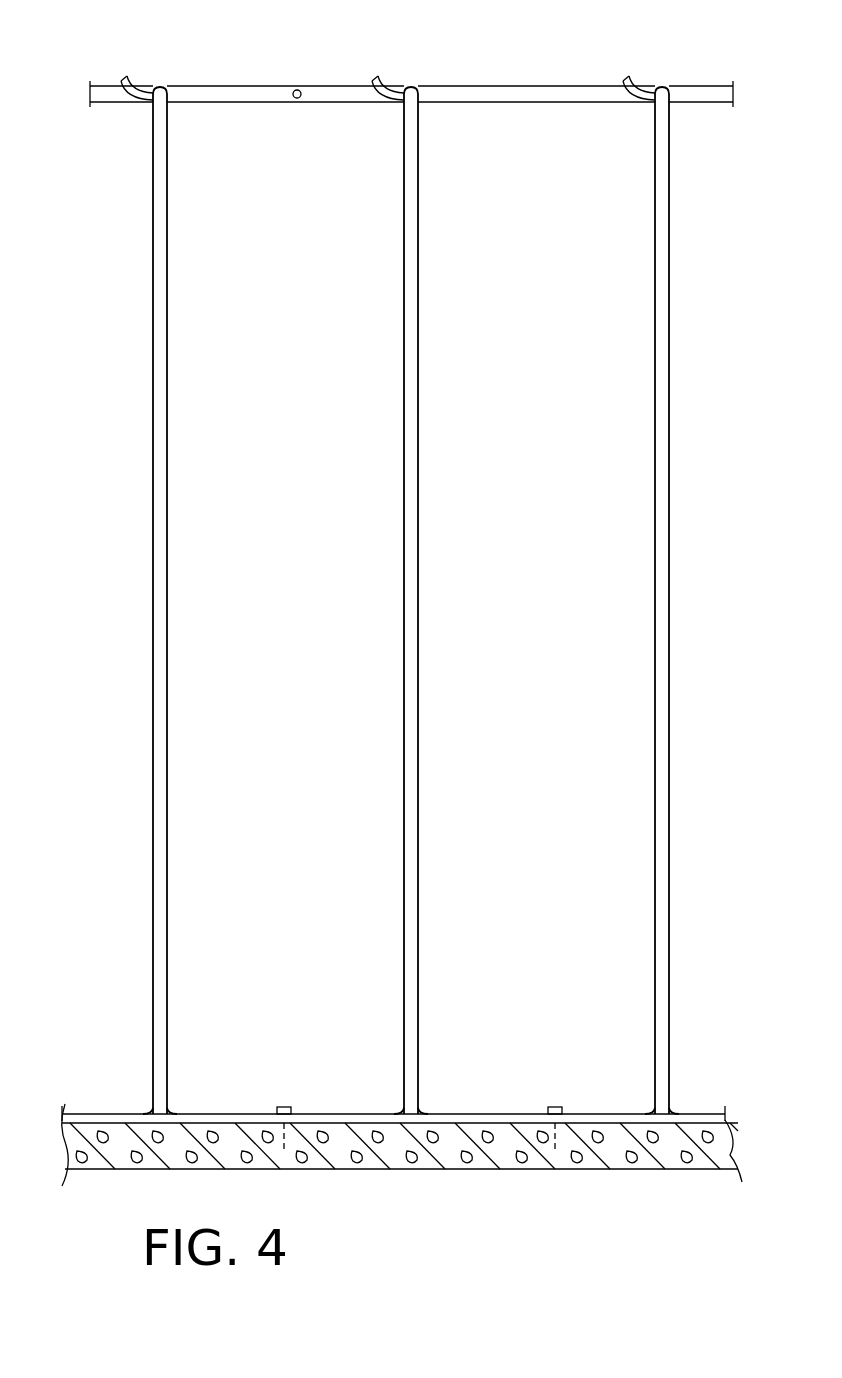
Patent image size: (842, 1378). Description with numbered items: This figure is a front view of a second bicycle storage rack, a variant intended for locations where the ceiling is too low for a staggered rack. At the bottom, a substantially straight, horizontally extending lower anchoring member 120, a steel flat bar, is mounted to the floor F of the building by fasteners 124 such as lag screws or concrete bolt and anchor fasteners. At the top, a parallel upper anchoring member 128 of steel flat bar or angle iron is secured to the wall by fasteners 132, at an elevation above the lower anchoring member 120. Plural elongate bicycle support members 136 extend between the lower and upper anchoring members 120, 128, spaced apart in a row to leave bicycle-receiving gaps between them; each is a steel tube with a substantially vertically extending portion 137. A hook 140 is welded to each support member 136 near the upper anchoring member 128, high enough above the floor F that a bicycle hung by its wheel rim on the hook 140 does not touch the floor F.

The lower anchoring member 120 is at (473, 1095).
The fasteners 124 is at (290, 1106).
The upper anchoring member 128 is at (497, 77).
The fasteners 132 is at (298, 89).
The bicycle support members 136 is at (138, 567).
The vertically extending portion 137 is at (167, 470).
The hook 140 is at (127, 79).
The floor F is at (590, 1170).